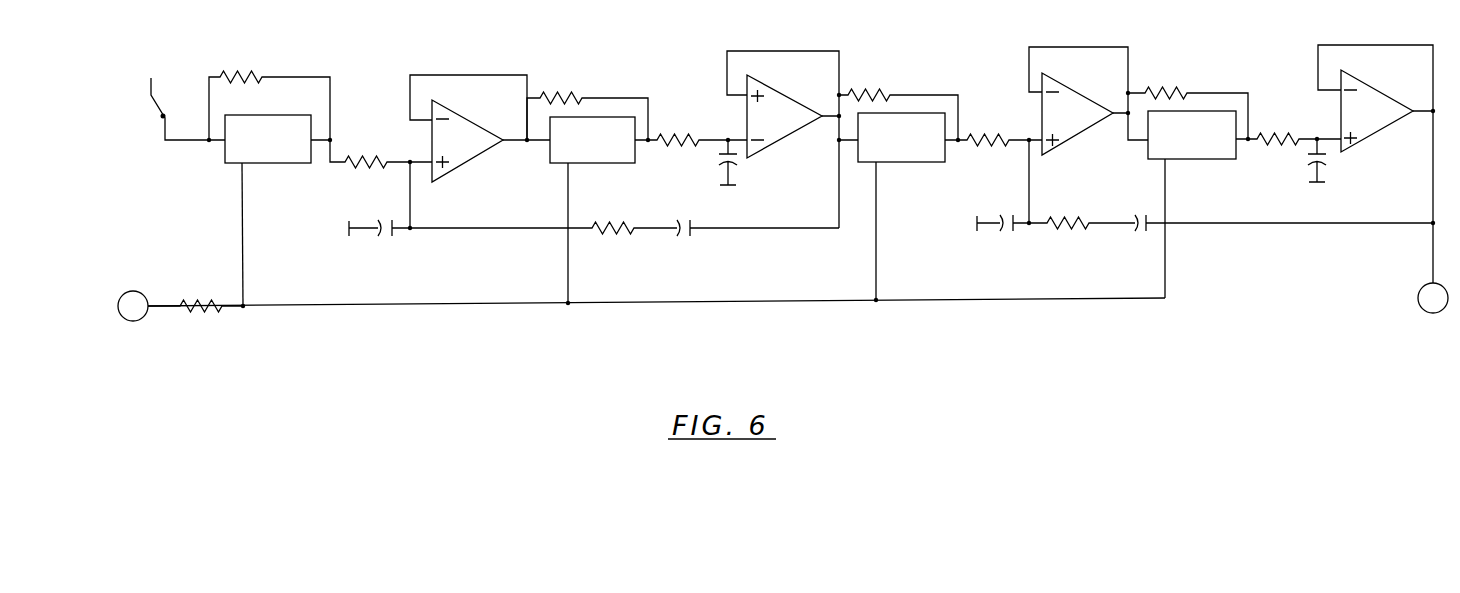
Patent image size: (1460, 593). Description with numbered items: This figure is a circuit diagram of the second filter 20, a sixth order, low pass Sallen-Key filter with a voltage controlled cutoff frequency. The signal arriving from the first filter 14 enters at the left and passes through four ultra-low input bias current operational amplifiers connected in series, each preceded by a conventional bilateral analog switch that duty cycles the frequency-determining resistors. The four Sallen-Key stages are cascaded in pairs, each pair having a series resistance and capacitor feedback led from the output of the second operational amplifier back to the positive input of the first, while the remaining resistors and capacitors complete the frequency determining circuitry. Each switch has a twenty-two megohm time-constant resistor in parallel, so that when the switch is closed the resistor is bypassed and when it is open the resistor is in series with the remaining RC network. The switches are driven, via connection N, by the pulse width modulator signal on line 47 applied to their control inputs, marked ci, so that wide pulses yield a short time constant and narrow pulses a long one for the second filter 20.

The first filter 14 is at (150, 95).
The second filter 20 is at (755, 195).
The line 47 is at (420, 306).